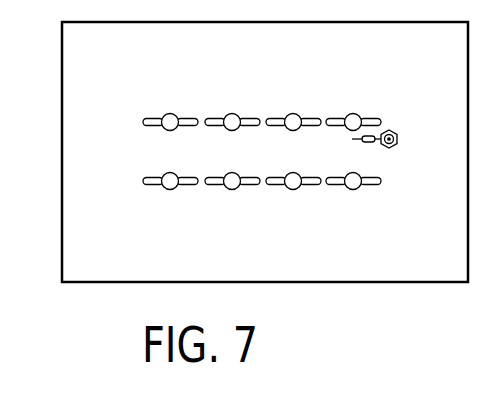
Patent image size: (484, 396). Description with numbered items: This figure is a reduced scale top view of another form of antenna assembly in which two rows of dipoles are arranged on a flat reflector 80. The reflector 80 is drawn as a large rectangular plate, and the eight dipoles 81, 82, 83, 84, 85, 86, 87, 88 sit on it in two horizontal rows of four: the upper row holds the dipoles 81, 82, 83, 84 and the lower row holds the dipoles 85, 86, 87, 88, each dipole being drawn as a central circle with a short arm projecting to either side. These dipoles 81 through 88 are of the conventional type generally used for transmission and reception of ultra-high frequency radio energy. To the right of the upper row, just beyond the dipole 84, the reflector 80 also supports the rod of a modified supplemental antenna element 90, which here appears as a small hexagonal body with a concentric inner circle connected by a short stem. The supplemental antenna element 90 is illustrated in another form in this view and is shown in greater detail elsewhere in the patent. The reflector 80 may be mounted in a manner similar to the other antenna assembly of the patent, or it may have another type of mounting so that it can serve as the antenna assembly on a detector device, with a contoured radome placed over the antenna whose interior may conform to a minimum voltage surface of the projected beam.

The flat reflector 80 is at (62, 110).
The dipole 81 is at (166, 113).
The dipole 82 is at (228, 113).
The dipole 83 is at (287, 113).
The dipole 84 is at (347, 113).
The dipole 85 is at (172, 190).
The dipole 86 is at (230, 190).
The dipole 87 is at (291, 190).
The dipole 88 is at (355, 190).
The supplemental antenna element 90 is at (383, 148).